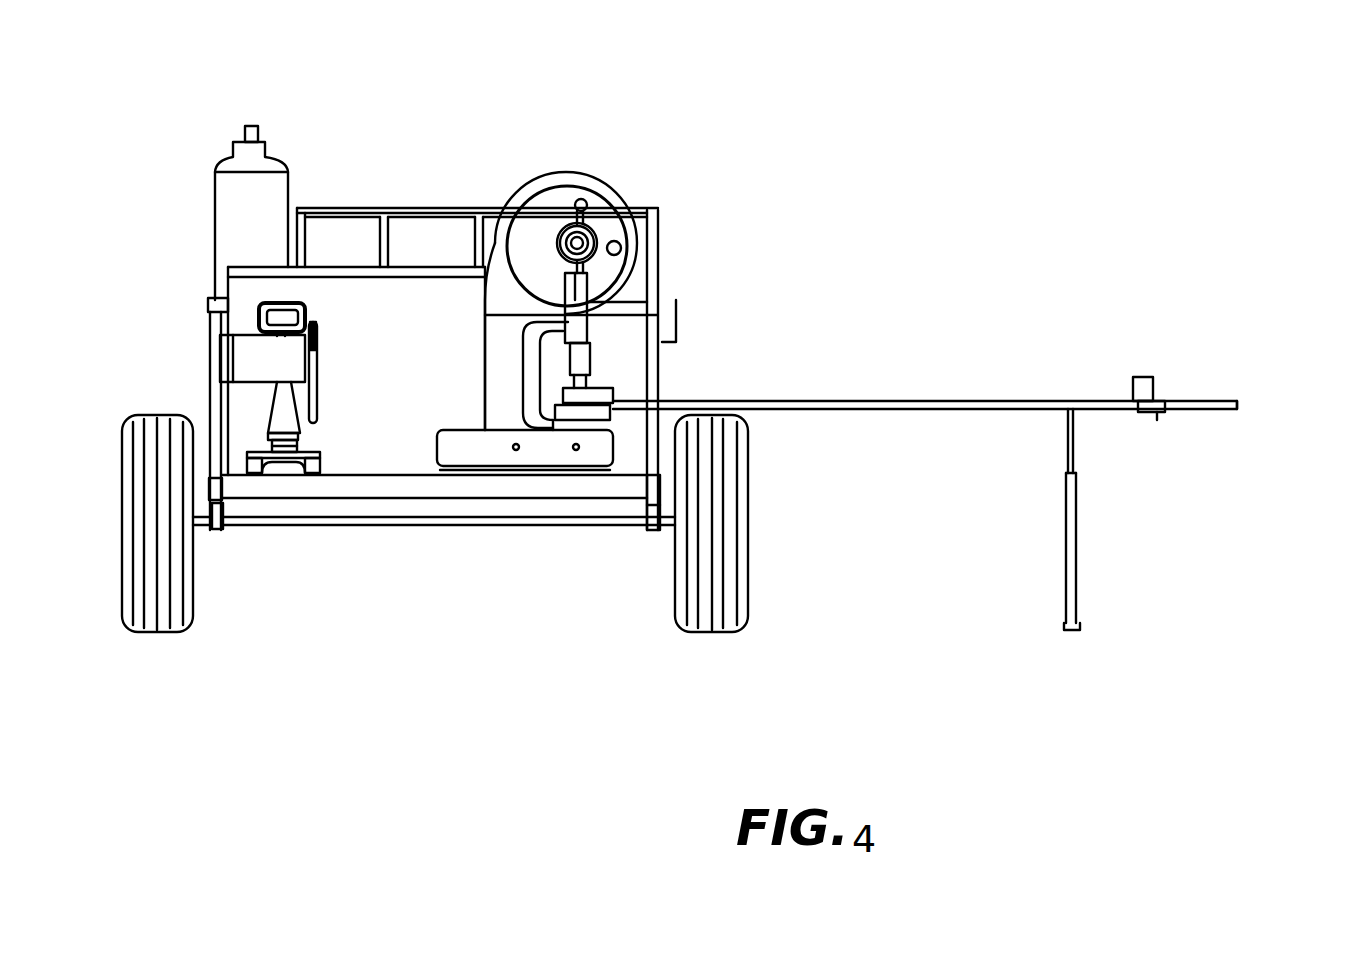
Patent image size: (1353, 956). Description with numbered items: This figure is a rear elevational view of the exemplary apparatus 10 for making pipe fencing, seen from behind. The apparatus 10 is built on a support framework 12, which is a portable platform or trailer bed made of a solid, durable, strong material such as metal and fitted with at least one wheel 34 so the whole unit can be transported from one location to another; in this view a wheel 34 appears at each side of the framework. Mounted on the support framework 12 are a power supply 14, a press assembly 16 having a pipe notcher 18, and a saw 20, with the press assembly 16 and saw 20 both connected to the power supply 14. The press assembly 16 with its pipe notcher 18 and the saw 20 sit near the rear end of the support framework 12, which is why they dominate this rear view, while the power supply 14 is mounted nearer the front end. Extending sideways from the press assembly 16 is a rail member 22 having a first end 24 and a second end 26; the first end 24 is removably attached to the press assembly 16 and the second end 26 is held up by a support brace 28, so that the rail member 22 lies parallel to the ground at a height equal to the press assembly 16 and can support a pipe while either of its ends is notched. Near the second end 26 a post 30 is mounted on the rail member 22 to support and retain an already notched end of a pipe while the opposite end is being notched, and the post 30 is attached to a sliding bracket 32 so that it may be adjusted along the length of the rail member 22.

The apparatus 10 is at (806, 126).
The support framework 12 is at (518, 490).
The power supply 14 is at (423, 330).
The press assembly 16 is at (577, 198).
The pipe notcher 18 is at (595, 370).
The saw 20 is at (318, 378).
The rail member 22 is at (905, 400).
The first end 24 is at (625, 405).
The second end 26 is at (1238, 402).
The support brace 28 is at (1076, 540).
The post 30 is at (1147, 380).
The sliding bracket 32 is at (1147, 412).
The wheel 34 is at (124, 519).